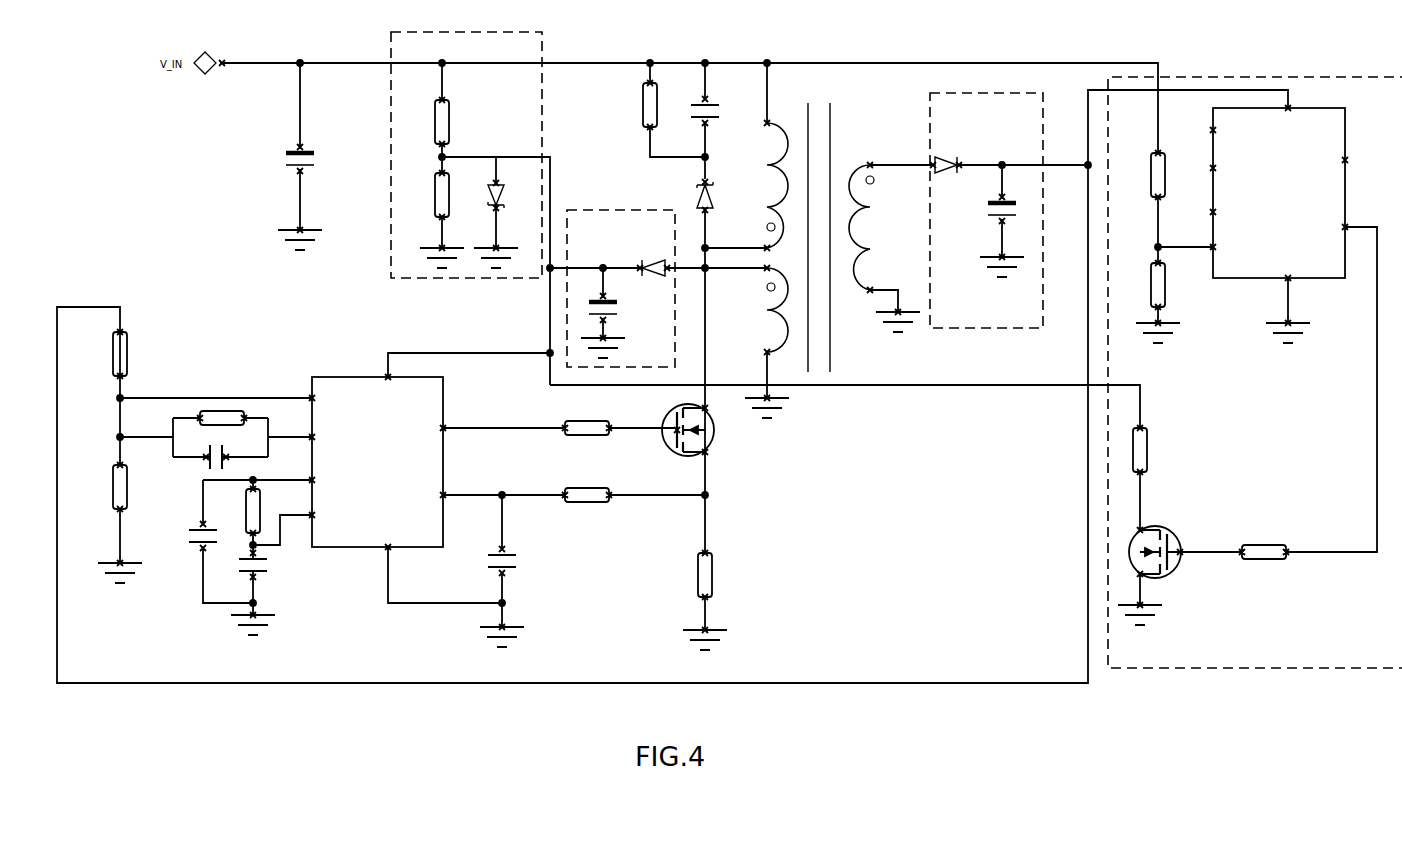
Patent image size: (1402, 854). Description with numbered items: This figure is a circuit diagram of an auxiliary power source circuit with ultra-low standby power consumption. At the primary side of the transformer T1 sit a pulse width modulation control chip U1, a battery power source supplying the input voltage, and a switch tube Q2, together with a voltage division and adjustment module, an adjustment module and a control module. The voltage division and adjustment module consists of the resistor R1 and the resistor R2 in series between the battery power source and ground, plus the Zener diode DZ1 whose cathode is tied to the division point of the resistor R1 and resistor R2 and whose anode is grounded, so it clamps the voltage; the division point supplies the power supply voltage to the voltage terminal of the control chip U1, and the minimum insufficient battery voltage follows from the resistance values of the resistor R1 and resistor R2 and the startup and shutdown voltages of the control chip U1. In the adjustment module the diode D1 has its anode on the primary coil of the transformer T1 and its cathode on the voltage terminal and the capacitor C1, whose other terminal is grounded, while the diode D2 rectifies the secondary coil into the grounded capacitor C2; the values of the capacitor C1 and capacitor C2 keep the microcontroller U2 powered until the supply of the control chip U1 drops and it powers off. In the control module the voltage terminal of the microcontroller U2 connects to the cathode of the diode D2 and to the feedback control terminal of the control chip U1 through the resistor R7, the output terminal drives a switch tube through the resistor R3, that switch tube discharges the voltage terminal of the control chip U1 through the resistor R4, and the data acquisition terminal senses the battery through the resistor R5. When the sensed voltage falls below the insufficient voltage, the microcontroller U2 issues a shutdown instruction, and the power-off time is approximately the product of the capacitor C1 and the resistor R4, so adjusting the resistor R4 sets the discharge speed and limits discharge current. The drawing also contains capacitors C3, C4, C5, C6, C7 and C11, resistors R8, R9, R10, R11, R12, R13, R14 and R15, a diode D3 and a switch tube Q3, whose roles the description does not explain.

The capacitor C1 is at (618, 313).
The capacitor C2 is at (706, 104).
The input capacitor C3 is at (302, 168).
The output capacitor C4 is at (1005, 233).
The timing capacitor C5 is at (253, 599).
The compensation capacitor C6 is at (220, 453).
The capacitor C7 is at (502, 581).
The reference bypass capacitor C11 is at (217, 541).
The resistor R1 is at (448, 110).
The resistor R2 is at (437, 212).
The resistor R3 is at (674, 110).
The resistor R4 is at (1165, 198).
The resistor R5 is at (1158, 305).
The resistor R7 is at (110, 363).
The resistor R8 is at (117, 503).
The resistor R9 is at (220, 413).
The timing resistor R10 is at (268, 512).
The resistor R11 is at (1146, 478).
The gate resistor R12 is at (1278, 393).
The gate resistor R13 is at (619, 420).
The resistor R14 is at (633, 487).
The current sense resistor R15 is at (698, 610).
The diode D1 is at (658, 258).
The diode D2 is at (979, 158).
The clamp diode D3 is at (697, 196).
The Zener diode DZ1 is at (504, 212).
The switch tube Q2 is at (674, 427).
The MOSFET Q3 is at (1159, 588).
The transformer T1 is at (832, 250).
The PWM control chip U1 is at (350, 450).
The MCU U2 is at (1305, 222).